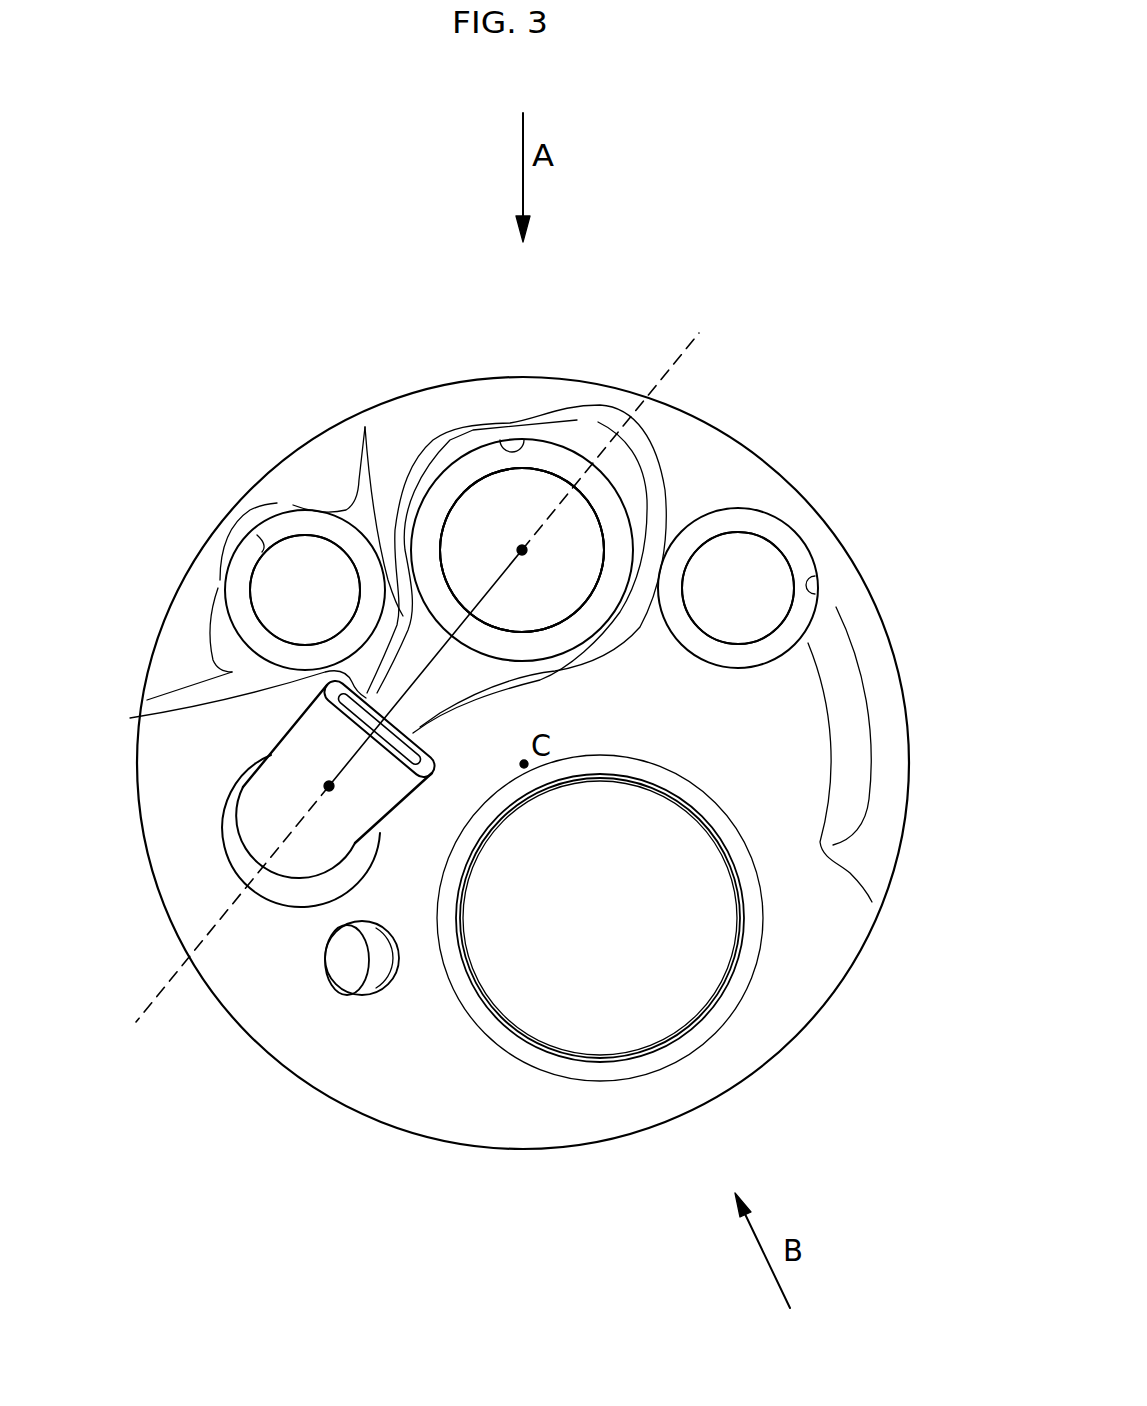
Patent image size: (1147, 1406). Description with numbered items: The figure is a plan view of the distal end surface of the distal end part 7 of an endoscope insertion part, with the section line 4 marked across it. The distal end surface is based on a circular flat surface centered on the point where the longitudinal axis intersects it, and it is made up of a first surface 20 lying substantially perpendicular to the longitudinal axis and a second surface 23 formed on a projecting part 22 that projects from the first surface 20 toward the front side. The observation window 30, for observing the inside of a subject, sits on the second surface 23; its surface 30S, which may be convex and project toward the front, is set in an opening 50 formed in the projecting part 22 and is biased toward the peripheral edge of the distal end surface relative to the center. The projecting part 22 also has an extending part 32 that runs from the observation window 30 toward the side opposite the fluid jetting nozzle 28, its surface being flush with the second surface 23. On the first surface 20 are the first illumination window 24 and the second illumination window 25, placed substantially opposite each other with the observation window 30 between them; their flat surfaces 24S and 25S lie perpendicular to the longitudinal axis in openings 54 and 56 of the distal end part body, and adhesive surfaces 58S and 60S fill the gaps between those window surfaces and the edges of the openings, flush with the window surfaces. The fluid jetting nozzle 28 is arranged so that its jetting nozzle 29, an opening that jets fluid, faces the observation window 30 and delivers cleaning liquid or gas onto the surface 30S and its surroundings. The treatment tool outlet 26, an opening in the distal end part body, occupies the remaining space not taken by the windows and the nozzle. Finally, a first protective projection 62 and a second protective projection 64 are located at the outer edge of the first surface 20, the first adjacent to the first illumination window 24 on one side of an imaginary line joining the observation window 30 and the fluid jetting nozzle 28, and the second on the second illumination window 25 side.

The distal end part 7 is at (352, 203).
The first surface 20 is at (818, 940).
The projecting part 22 is at (466, 428).
The second surface 23 is at (365, 427).
The first illumination window 24 is at (302, 570).
The surface of the first illumination window 24S is at (305, 590).
The second illumination window 25 is at (747, 567).
The surface of the second illumination window 25S is at (738, 588).
The treatment tool outlet 26 is at (610, 1010).
The fluid jetting nozzle 28 is at (272, 793).
The jetting nozzle 29 is at (147, 700).
The observation window 30 is at (572, 555).
The surface of the observation window 30S is at (522, 550).
The extending part 32 is at (587, 443).
The section line IV-IV 4 is at (682, 336).
The opening 50 is at (518, 437).
The opening 54 is at (257, 535).
The opening 56 is at (818, 597).
The surface of adhesive 58S is at (243, 613).
The surface of adhesive 60S is at (797, 557).
The first protective projection 62 is at (197, 577).
The second protective projection 64 is at (890, 695).